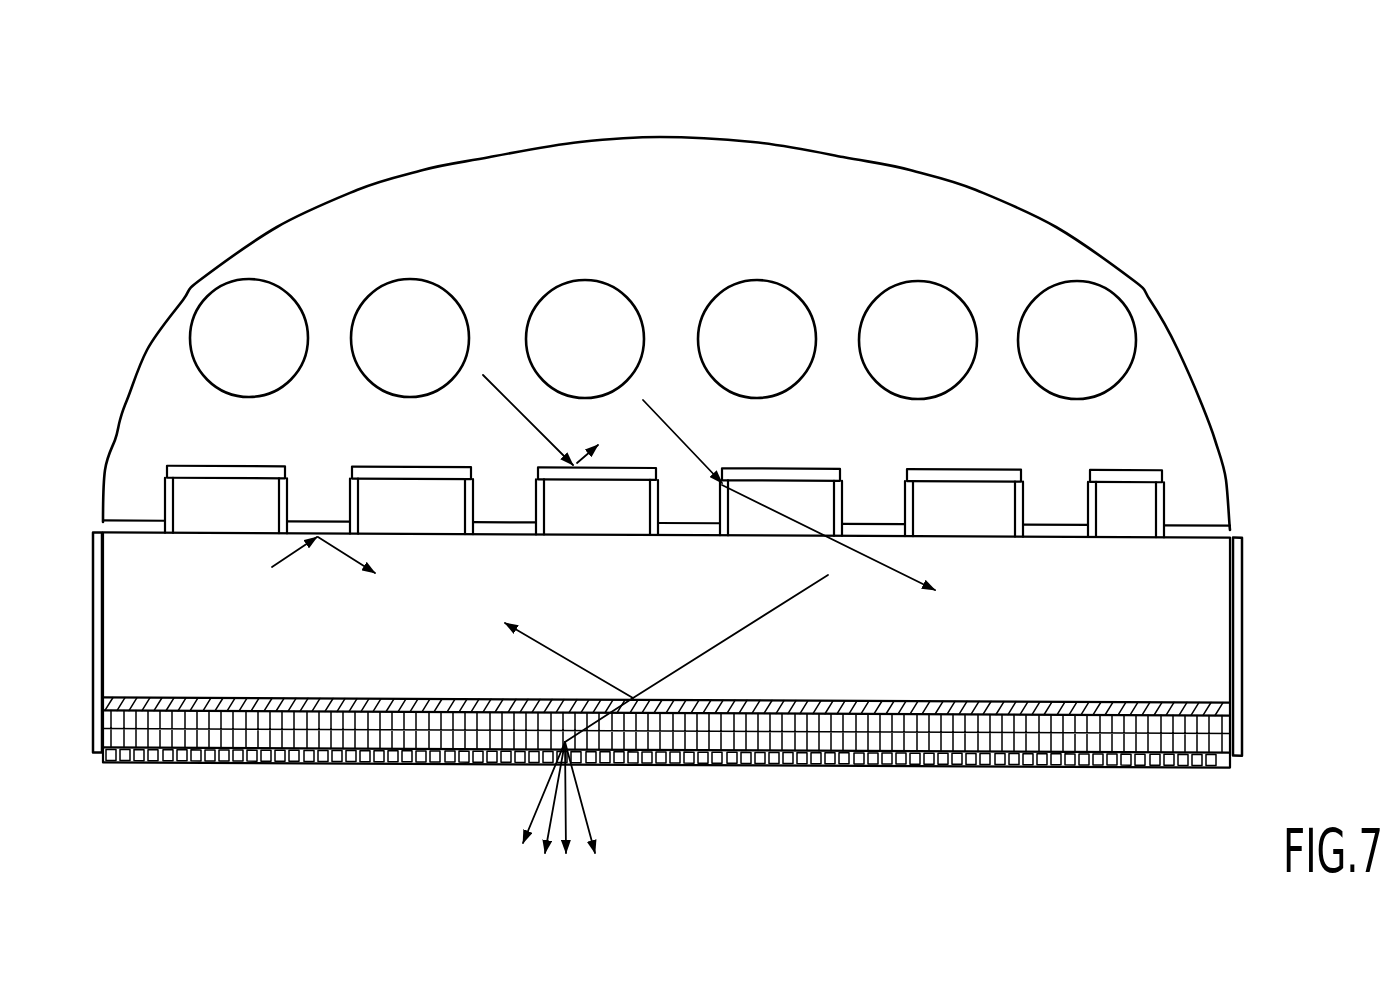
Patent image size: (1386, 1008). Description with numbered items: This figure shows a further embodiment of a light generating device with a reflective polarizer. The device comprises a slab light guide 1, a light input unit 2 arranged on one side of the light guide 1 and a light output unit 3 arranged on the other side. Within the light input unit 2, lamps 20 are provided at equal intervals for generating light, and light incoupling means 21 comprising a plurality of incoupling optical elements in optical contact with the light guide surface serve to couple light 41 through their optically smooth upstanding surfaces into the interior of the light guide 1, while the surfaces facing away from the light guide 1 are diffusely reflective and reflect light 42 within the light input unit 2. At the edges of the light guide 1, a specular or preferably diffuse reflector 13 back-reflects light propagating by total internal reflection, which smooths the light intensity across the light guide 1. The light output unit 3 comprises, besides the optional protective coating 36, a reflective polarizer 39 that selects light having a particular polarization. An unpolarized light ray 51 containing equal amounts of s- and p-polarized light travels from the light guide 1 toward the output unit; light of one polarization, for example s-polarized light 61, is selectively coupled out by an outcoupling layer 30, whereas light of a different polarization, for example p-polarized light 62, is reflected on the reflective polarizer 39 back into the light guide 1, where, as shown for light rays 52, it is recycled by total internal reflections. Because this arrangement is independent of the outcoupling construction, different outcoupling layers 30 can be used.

The light guide 1 is at (1257, 635).
The light input unit 2 is at (1257, 414).
The light output unit 3 is at (724, 789).
The reflector 13 is at (1235, 587).
The lamps 20 is at (758, 306).
The light incoupling means 21 is at (1240, 502).
The outcoupling layer 30 is at (1122, 732).
The protective coating 36 is at (1037, 752).
The reflective polarizer 39 is at (942, 707).
The light 41 is at (680, 435).
The light 42 is at (500, 390).
The light ray 51 is at (737, 635).
The light rays 52 is at (343, 550).
The light ray 61 is at (580, 795).
The light ray 62 is at (550, 653).